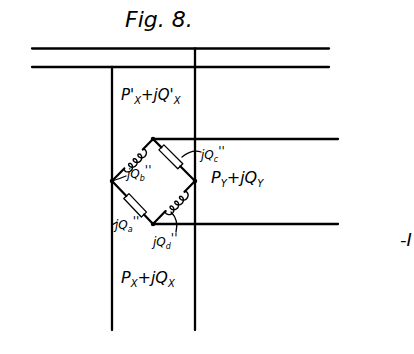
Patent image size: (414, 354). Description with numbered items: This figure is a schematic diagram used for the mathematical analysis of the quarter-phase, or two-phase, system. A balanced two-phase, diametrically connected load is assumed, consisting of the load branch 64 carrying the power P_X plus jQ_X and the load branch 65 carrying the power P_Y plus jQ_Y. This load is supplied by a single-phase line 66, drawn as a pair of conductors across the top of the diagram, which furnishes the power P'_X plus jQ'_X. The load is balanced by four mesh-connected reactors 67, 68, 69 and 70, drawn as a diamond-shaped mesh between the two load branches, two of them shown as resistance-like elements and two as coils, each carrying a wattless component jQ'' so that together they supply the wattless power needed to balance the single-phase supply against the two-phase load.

The two-phase load branch 64 is at (196, 313).
The two-phase load branch 65 is at (293, 223).
The single-phase line 66 is at (270, 58).
The mesh-connected reactor 67 is at (150, 199).
The mesh-connected reactor 68 is at (130, 152).
The mesh-connected reactor 69 is at (180, 139).
The mesh-connected reactor 70 is at (182, 205).